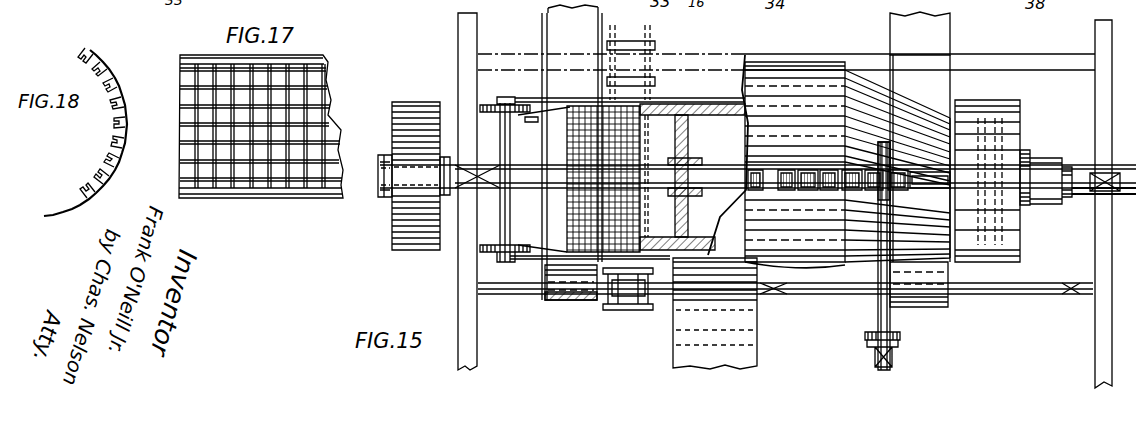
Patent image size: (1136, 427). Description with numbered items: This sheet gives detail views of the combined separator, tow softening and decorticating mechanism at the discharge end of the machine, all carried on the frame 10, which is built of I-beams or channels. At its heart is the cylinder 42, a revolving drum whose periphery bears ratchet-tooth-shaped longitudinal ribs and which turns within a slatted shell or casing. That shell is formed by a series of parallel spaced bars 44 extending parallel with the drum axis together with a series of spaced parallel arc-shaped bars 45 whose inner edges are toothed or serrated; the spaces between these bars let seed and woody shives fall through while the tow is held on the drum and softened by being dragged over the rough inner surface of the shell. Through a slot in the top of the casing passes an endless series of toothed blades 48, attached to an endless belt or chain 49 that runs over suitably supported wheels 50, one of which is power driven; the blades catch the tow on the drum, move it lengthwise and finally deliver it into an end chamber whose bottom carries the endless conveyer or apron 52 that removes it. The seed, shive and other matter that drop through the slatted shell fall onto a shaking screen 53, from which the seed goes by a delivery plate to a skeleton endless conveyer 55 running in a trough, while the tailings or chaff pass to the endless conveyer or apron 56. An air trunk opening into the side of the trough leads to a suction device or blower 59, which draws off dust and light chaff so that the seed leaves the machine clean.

In FIG. 15, the frame 10 is at (785, 196).
In FIG. 15, the cylinder 42 is at (694, 155).
In FIG. 18, the parallel spaced bars 44 is at (103, 152).
In FIG. 17, the parallel spaced bars 44 is at (323, 72).
In FIG. 18, the arc-shaped bars 45 is at (108, 82).
In FIG. 17, the arc-shaped bars 45 is at (336, 98).
In FIG. 15, the blades 48 is at (805, 186).
In FIG. 15, the endless belt or chain 49 is at (752, 172).
In FIG. 15, the wheels 50 is at (878, 160).
In FIG. 15, the endless conveyer or apron 52 is at (935, 42).
In FIG. 15, the shaking screen 53 is at (567, 222).
In FIG. 15, the skeleton endless conveyer 55 is at (656, 46).
In FIG. 15, the endless conveyer or apron 56 is at (560, 300).
In FIG. 15, the suction device or blower 59 is at (1008, 143).